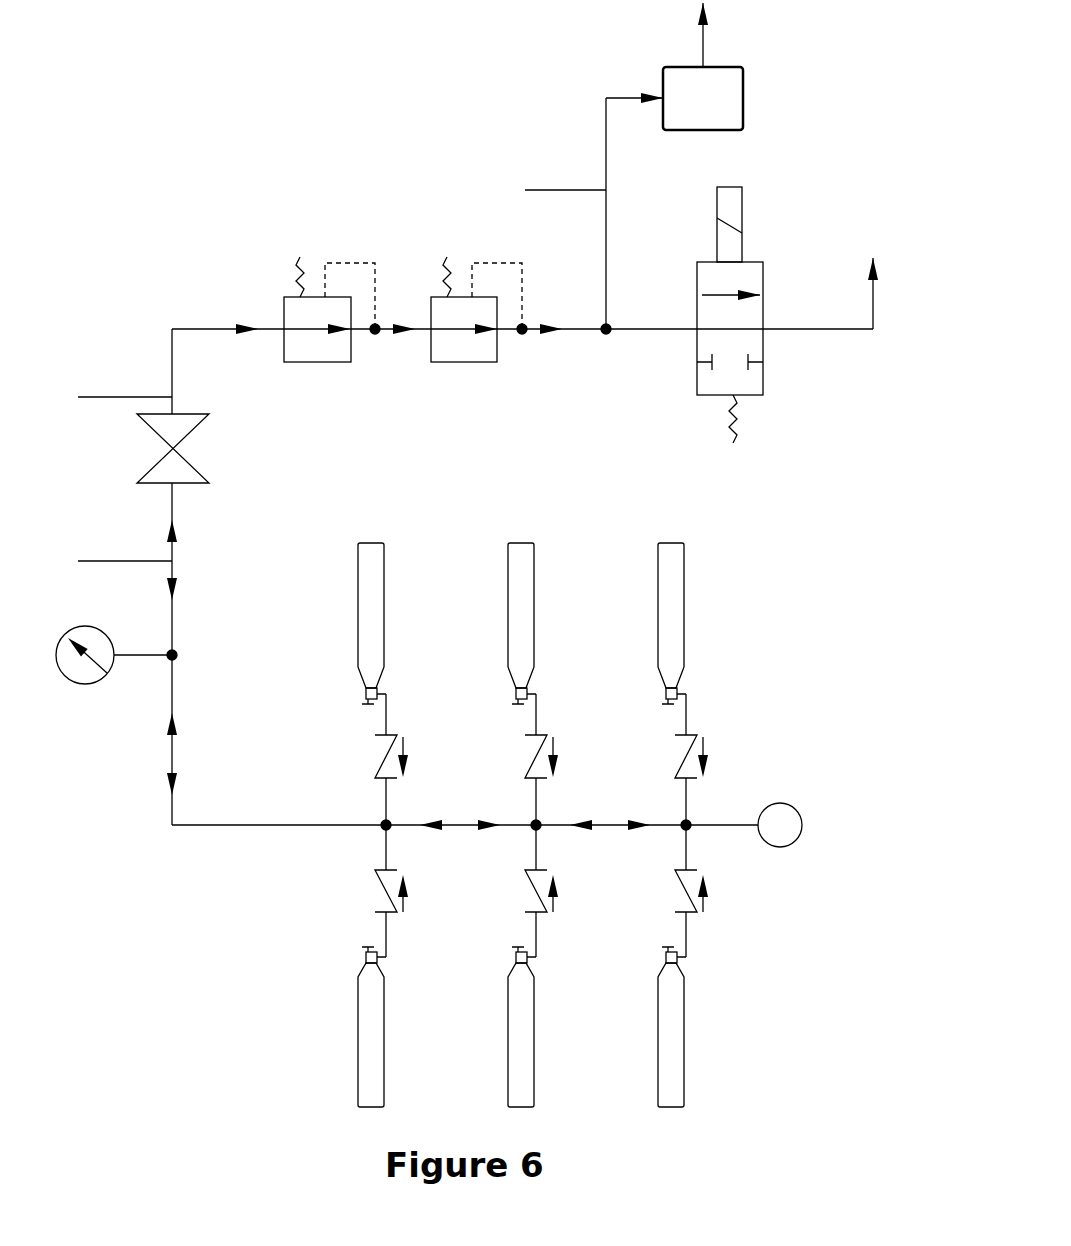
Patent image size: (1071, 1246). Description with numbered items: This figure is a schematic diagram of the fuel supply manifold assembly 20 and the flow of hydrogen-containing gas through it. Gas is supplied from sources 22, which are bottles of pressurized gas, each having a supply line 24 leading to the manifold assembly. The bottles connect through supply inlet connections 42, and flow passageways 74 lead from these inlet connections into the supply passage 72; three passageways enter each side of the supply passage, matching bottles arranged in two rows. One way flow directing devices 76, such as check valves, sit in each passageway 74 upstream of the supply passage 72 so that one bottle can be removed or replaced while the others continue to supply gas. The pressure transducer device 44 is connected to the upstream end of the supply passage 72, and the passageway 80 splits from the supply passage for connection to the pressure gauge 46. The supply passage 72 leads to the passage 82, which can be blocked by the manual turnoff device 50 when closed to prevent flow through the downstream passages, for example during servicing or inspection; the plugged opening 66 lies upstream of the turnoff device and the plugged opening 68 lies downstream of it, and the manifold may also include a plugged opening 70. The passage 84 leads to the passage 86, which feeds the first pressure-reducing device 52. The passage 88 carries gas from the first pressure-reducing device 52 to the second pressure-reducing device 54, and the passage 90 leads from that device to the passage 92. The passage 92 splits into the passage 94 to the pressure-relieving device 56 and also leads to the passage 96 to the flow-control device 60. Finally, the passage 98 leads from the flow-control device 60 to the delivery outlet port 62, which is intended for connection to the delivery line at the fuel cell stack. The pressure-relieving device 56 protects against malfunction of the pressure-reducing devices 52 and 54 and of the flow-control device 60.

The fuel supply manifold assembly 20 is at (113, 293).
The source 22 is at (378, 620).
The supply line 24 is at (387, 713).
The supply inlet connections 42 is at (387, 797).
The pressure transducer device 44 is at (800, 806).
The pressure gauge 46 is at (100, 625).
The manual turnoff device 50 is at (152, 467).
The first pressure-reducing device 52 is at (328, 363).
The second pressure-reducing device 54 is at (463, 363).
The pressure-relieving device 56 is at (745, 92).
The flow-control device 60 is at (745, 396).
The delivery outlet port 62 is at (876, 262).
The plugged opening 66 is at (108, 561).
The plugged opening 68 is at (108, 397).
The plugged opening 70 is at (549, 190).
The supply passage 72 is at (218, 827).
The flow passageways 74 is at (388, 807).
The one way flow directing devices 76 is at (385, 760).
The passageway 80 is at (138, 658).
The passage 82 is at (172, 543).
The passage 84 is at (172, 371).
The passage 86 is at (195, 329).
The passage 88 is at (385, 333).
The passage 90 is at (533, 335).
The passage 92 is at (582, 337).
The passage 94 is at (605, 143).
The passage 96 is at (660, 327).
The passage 98 is at (872, 302).